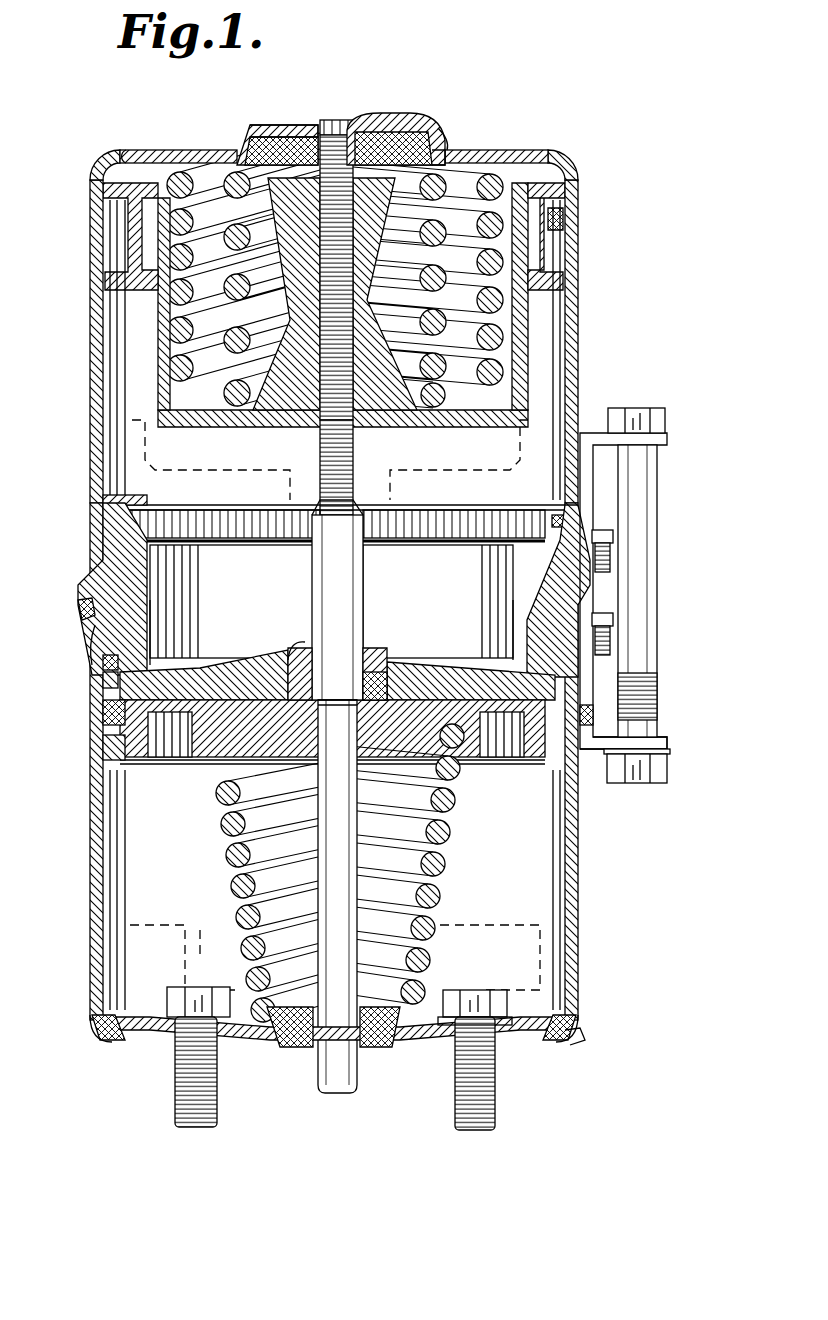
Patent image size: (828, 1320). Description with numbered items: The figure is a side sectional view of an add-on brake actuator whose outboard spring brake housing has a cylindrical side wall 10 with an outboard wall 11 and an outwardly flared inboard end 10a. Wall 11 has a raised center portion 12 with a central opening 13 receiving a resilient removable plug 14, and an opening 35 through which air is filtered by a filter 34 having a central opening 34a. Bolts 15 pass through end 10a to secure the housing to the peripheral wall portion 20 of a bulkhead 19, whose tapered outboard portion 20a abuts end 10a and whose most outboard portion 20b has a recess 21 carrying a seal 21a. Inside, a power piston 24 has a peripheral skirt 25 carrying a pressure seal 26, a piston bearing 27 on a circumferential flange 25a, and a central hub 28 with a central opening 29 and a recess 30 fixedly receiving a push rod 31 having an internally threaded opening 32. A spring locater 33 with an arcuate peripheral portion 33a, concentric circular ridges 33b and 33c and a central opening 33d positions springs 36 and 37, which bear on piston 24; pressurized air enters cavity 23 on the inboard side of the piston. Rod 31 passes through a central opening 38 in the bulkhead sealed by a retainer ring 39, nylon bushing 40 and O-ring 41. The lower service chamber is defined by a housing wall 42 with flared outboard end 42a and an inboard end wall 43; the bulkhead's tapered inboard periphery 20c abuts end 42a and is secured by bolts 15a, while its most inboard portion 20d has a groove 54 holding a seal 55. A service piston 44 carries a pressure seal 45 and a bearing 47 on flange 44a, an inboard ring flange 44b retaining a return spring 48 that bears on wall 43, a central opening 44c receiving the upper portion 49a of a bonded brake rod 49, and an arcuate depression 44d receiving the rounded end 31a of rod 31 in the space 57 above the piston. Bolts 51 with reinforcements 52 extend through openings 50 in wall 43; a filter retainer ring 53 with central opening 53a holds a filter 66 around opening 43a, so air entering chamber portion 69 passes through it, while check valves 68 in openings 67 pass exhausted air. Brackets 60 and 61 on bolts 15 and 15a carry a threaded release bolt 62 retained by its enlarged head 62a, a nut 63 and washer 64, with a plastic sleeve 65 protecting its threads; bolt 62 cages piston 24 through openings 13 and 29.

The cylindrical side wall of spring brake housing 10 is at (92, 378).
The inboard end of cylinder 10a is at (80, 580).
The outboard wall of cylinder 11 is at (180, 152).
The raised center portion 12 is at (245, 130).
The central opening 13 is at (325, 125).
The resilient removable plug 14 is at (395, 128).
The bolts 15 is at (603, 535).
The bolts 15a is at (612, 652).
The bulkhead 19 is at (248, 665).
The peripheral outwardly extending wall portion 20 is at (150, 555).
The outboard portion of wall 20a is at (150, 580).
The most outboard portion of wall 20b is at (108, 510).
The inboard periphery of bulkhead 20c is at (88, 625).
The most inboard peripheral portion of bulkhead 20d is at (130, 665).
The circumferential recess 21 is at (108, 525).
The seal 21a is at (105, 520).
The cavity 23 is at (472, 568).
The power piston 24 is at (468, 430).
The peripheral skirt 25 is at (528, 320).
The circumferential flange 25a is at (135, 210).
The pressure seal 26 is at (578, 240).
The piston bearing 27 is at (563, 225).
The central hub 28 is at (446, 230).
The central opening 29 is at (446, 190).
The recess 30 is at (380, 268).
The push rod 31 is at (355, 590).
The rounded end of push rod 31a is at (342, 700).
The central outboard opening 32 is at (360, 447).
The spring locater 33 is at (480, 162).
The arcuate peripheral portion 33a is at (125, 152).
The circular ridge 33b is at (100, 165).
The circular ridge 33c is at (260, 150).
The central opening 33d is at (285, 135).
The filter 34 is at (418, 150).
The central opening 34a is at (358, 130).
The opening 35 is at (432, 145).
The spring 36 is at (170, 302).
The spring 37 is at (240, 238).
The central opening 38 is at (362, 640).
The retainer ring 39 is at (372, 690).
The nylon bushing 40 is at (290, 642).
The O-ring 41 is at (385, 660).
The housing wall 42 is at (92, 830).
The flared outboard end 42a is at (80, 608).
The inboard end wall 43 is at (112, 1040).
The opening 43a is at (280, 1010).
The service piston 44 is at (205, 700).
The circumferential flange 44a is at (165, 770).
The inboard ring flange 44b is at (487, 770).
The central opening 44c is at (240, 770).
The arcuate depression 44d is at (447, 750).
The pressure seal 45 is at (105, 710).
The piston bearing 47 is at (105, 748).
The piston return spring 48 is at (437, 862).
The brake rod 49 is at (318, 1082).
The upper portion of brake rod 49a is at (440, 800).
The openings 50 is at (210, 1032).
The bolts 51 is at (180, 1125).
The reinforcements 52 is at (152, 995).
The filter retainer ring 53 is at (440, 1030).
The central opening 53a is at (448, 1040).
The circumferential groove 54 is at (105, 680).
The seal member 55 is at (105, 662).
The space 57 is at (585, 730).
The bracket 60 is at (588, 433).
The bracket 61 is at (602, 752).
The externally threaded bolt 62 is at (657, 712).
The enlarged head 62a is at (655, 412).
The nut 63 is at (668, 775).
The washer 64 is at (672, 755).
The plastic sleeve 65 is at (657, 577).
The filter 66 is at (365, 1050).
The openings 67 is at (578, 1015).
The one-way check valves 68 is at (570, 1045).
The chamber portion 69 is at (115, 868).